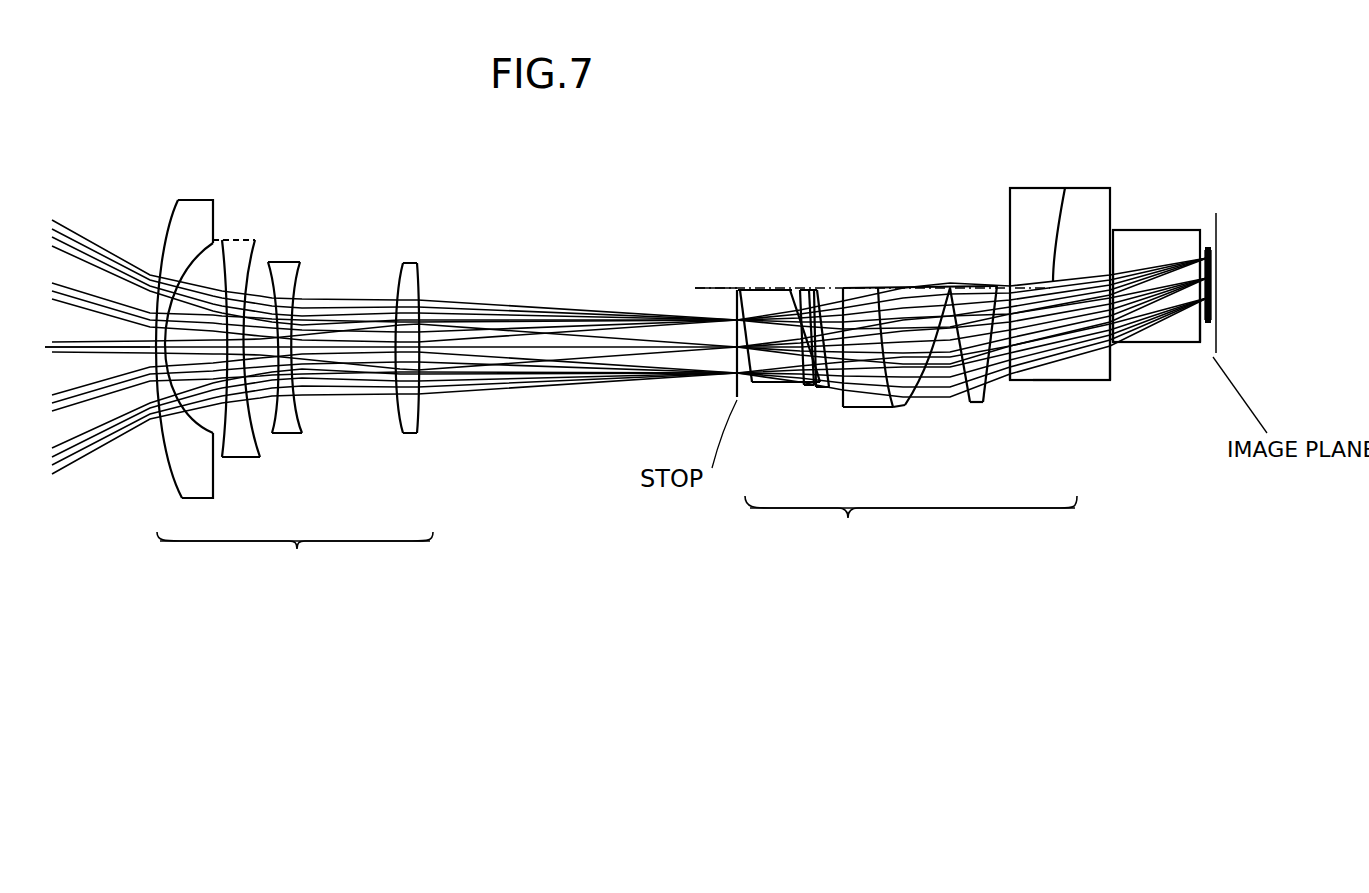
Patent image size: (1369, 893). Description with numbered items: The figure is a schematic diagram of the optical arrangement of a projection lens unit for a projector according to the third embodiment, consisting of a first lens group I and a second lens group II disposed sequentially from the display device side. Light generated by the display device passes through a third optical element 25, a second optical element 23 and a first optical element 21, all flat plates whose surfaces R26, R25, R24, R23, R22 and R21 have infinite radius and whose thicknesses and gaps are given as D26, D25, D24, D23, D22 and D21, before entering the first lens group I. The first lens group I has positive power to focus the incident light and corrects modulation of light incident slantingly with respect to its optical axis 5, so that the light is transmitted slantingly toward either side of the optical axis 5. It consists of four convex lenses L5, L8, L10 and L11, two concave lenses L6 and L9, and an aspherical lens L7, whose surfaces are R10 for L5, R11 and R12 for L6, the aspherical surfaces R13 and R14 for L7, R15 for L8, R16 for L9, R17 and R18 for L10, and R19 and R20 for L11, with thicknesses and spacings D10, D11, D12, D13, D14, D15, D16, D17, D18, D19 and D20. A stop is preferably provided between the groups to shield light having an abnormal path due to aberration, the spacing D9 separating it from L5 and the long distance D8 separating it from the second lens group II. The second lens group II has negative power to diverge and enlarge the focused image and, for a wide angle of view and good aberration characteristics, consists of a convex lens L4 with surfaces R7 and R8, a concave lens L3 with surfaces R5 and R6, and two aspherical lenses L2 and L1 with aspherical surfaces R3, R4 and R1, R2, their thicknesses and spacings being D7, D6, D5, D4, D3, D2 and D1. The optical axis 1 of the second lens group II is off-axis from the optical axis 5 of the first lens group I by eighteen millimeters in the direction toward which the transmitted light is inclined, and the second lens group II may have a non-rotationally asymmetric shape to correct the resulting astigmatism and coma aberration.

The optical axis of the second lens group 1 is at (48, 345).
The optical axis of the first lens group 5 is at (703, 290).
The first optical element 21 is at (1058, 312).
The second optical element 23 is at (1165, 300).
The third optical element 25 is at (1239, 339).
The first lens group I is at (912, 534).
The second lens group II is at (295, 566).
The aspherical lens L1 is at (182, 328).
The aspherical lens L2 is at (260, 338).
The concave lens L3 is at (321, 352).
The convex lens L4 is at (424, 357).
The convex lens L5 is at (766, 342).
The concave lens L6 is at (830, 325).
The aspherical lens L7 is at (857, 313).
The convex lens L8 is at (920, 372).
The concave lens L9 is at (947, 360).
The convex lens L10 is at (987, 373).
The convex lens L11 is at (962, 288).
The radius of curvature R1 is at (163, 460).
The radius of curvature R2 is at (215, 457).
The radius of curvature R3 is at (223, 447).
The radius of curvature R4 is at (272, 440).
The radius of curvature R5 is at (287, 437).
The radius of curvature R6 is at (320, 437).
The radius of curvature R7 is at (395, 443).
The radius of curvature R8 is at (433, 437).
The radius of curvature R10 is at (742, 388).
The radius of curvature R11 is at (800, 385).
The radius of curvature R12 is at (803, 388).
The radius of curvature R13 is at (813, 390).
The radius of curvature R14 is at (828, 390).
The radius of curvature R15 is at (843, 410).
The radius of curvature R16 is at (893, 410).
The radius of curvature R17 is at (905, 408).
The radius of curvature R18 is at (970, 405).
The radius of curvature R19 is at (983, 405).
The radius of curvature R20 is at (1010, 382).
The radius of curvature R21 is at (1033, 382).
The radius of curvature R22 is at (1112, 382).
The radius of curvature R23 is at (1113, 347).
The radius of curvature R24 is at (1200, 347).
The radius of curvature R25 is at (1207, 352).
The radius of curvature R26 is at (1215, 300).
The lens thickness D1 is at (162, 347).
The distance D2 is at (215, 243).
The lens thickness D3 is at (250, 262).
The distance D4 is at (290, 295).
The lens thickness D5 is at (322, 320).
The distance D6 is at (345, 345).
The lens thickness D7 is at (420, 300).
The distance D8 is at (488, 345).
The distance D9 is at (740, 288).
The lens thickness D10 is at (760, 288).
The lens thickness D11 is at (783, 288).
The distance D12 is at (802, 288).
The lens thickness D13 is at (812, 288).
The distance D14 is at (857, 288).
The lens thickness D15 is at (887, 288).
The lens thickness D16 is at (893, 288).
The lens thickness D17 is at (933, 288).
The distance D18 is at (952, 288).
The lens thickness D19 is at (983, 282).
The distance D20 is at (1007, 288).
The optical element thickness D21 is at (1065, 188).
The distance D22 is at (1115, 230).
The optical element thickness D23 is at (1150, 230).
The distance D24 is at (1210, 247).
The optical element thickness D25 is at (1213, 270).
The distance D26 is at (1213, 290).